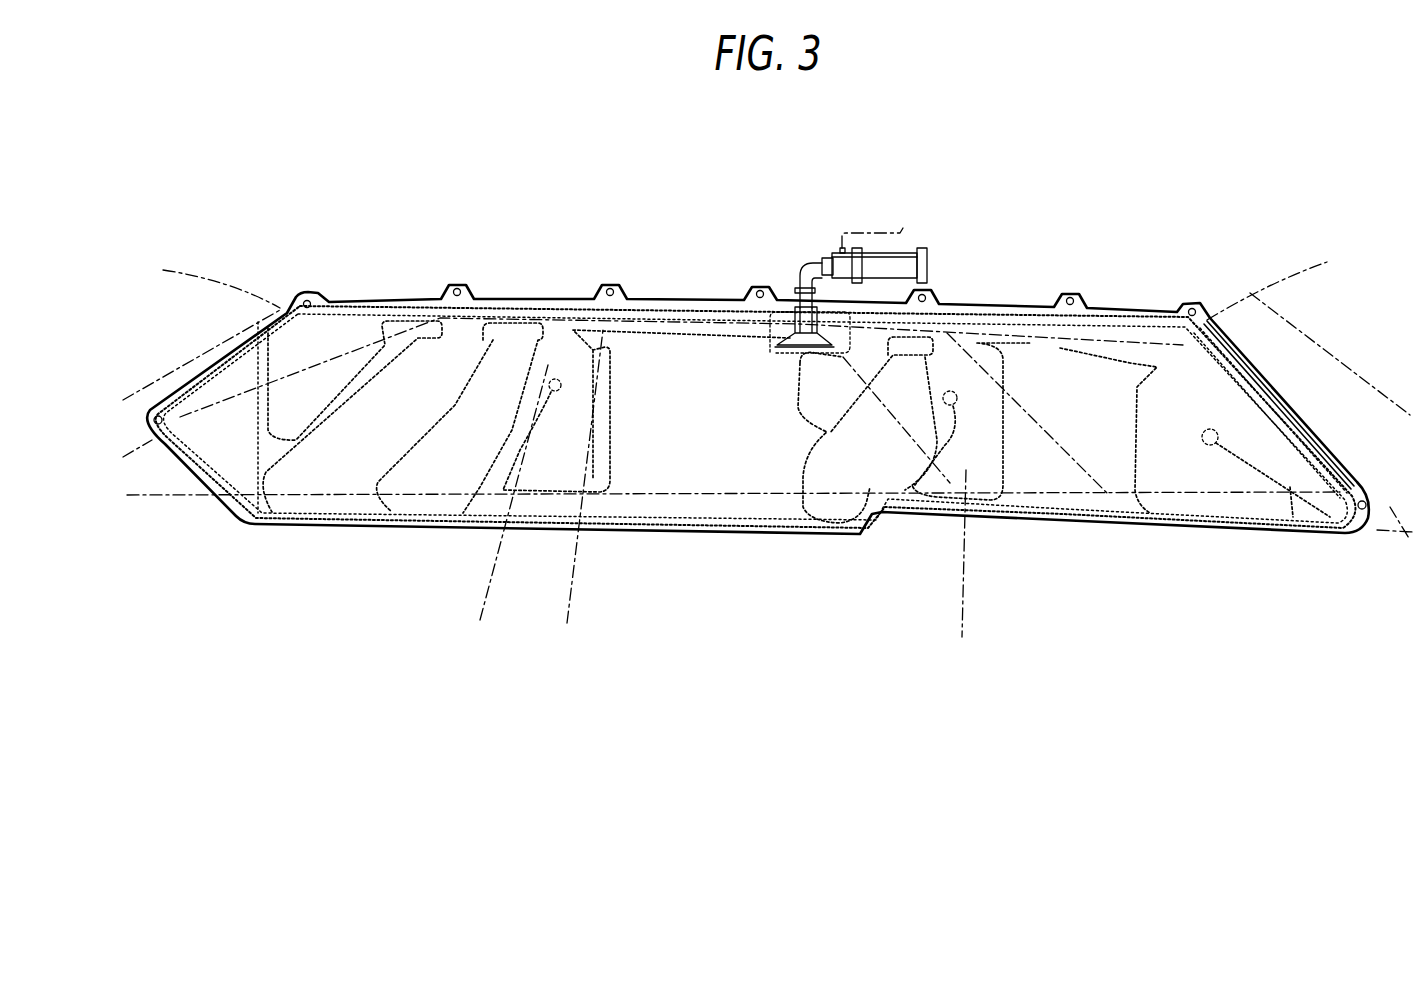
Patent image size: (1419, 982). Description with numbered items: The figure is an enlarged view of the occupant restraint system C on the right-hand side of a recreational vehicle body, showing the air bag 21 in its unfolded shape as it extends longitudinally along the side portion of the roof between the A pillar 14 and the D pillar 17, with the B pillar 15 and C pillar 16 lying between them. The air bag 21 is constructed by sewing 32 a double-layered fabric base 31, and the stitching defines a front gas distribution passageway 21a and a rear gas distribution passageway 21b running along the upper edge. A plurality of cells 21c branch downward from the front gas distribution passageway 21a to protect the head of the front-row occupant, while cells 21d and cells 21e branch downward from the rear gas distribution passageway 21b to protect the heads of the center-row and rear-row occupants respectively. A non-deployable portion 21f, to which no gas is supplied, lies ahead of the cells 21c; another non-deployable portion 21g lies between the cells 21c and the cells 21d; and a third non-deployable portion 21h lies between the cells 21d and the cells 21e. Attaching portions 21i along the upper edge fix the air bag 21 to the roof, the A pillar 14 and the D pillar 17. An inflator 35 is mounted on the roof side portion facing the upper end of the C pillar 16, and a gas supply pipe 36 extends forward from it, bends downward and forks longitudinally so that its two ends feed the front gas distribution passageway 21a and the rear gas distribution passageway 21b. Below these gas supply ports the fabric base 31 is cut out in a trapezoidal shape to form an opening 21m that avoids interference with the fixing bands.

The A pillar 14 is at (217, 350).
The B pillar 15 is at (497, 577).
The C pillar 16 is at (1043, 423).
The D pillar 17 is at (1323, 360).
The air bag 21 is at (652, 537).
The front gas distribution passageway 21a is at (522, 308).
The rear gas distribution passageway 21b is at (1025, 323).
The cells 21c is at (367, 457).
The cells 21d is at (840, 393).
The cells 21e is at (1253, 440).
The non-deployable portion 21f is at (203, 430).
The non-deployable portion 21g is at (688, 347).
The non-deployable portion 21h is at (1110, 443).
The attaching portions 21i is at (305, 298).
The opening 21m is at (800, 352).
The fabric base 31 is at (747, 490).
The sewing 32 is at (650, 297).
The inflator 35 is at (903, 262).
The gas supply pipe 36 is at (803, 262).
The occupant restraint system C is at (985, 200).